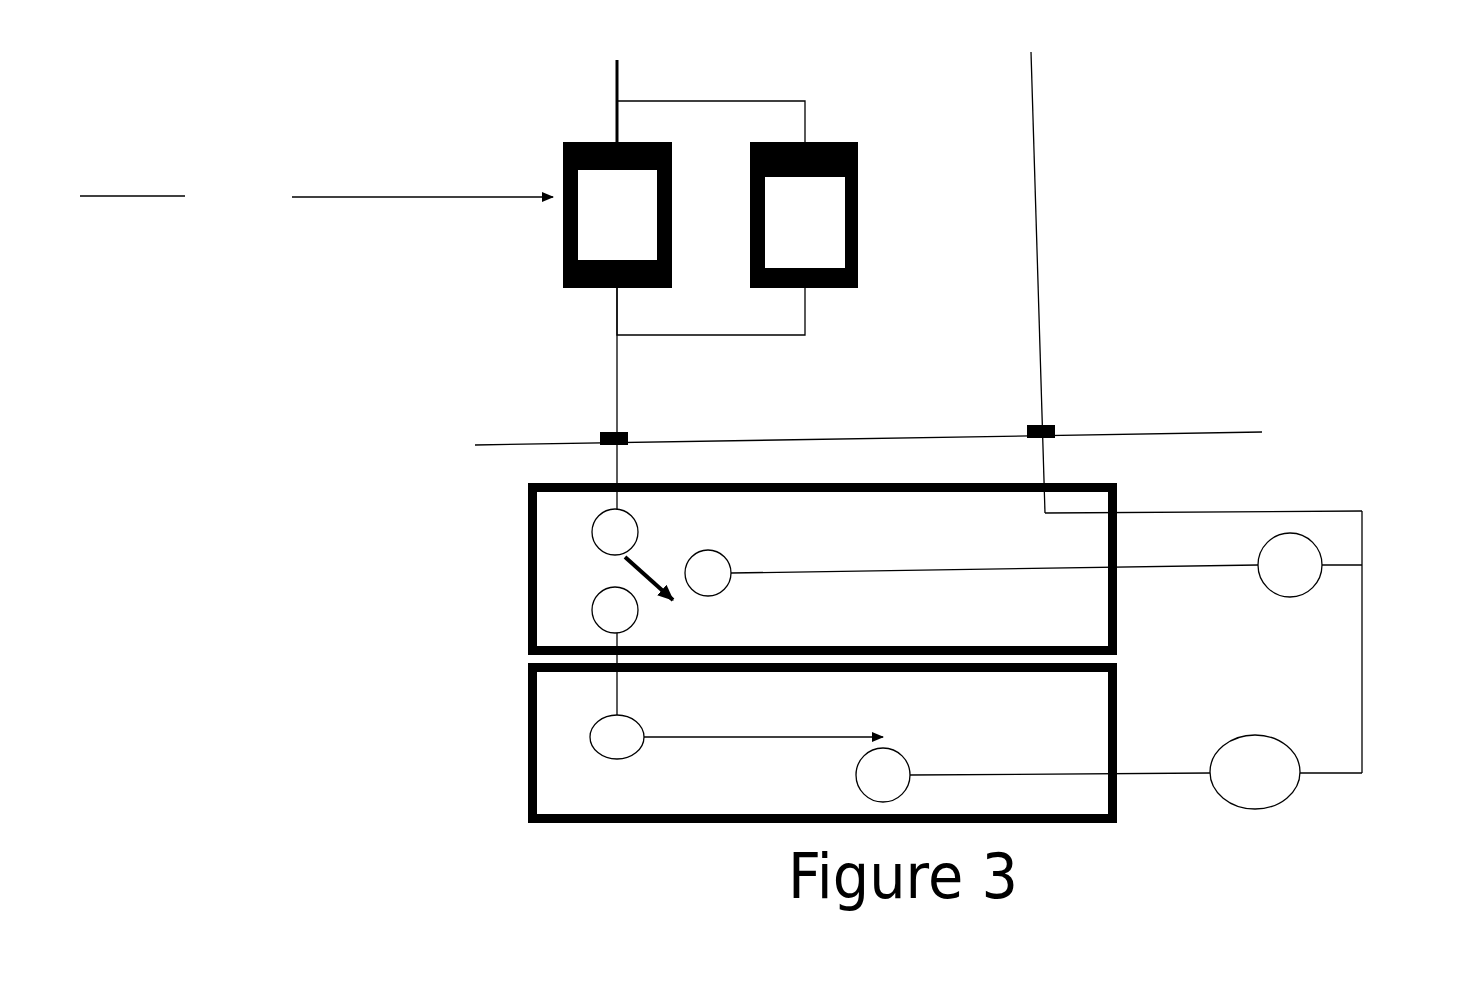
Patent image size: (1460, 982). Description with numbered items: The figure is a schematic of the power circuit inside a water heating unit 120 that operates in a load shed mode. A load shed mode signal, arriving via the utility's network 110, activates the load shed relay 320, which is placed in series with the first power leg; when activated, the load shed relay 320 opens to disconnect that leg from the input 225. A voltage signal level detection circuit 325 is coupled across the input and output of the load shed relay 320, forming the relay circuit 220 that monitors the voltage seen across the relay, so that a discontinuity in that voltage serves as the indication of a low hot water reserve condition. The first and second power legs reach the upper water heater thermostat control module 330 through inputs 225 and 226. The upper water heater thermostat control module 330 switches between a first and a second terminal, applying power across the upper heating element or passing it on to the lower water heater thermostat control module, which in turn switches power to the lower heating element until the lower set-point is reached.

The network 110 is at (123, 197).
The water heating unit 120 is at (963, 389).
The load shed relay circuit 220 is at (742, 87).
The load shed relay 320 is at (617, 215).
The voltage signal level detection circuit 325 is at (862, 213).
The input 225 is at (632, 423).
The input 226 is at (1062, 413).
The upper water heater thermostat control module 330 is at (522, 578).